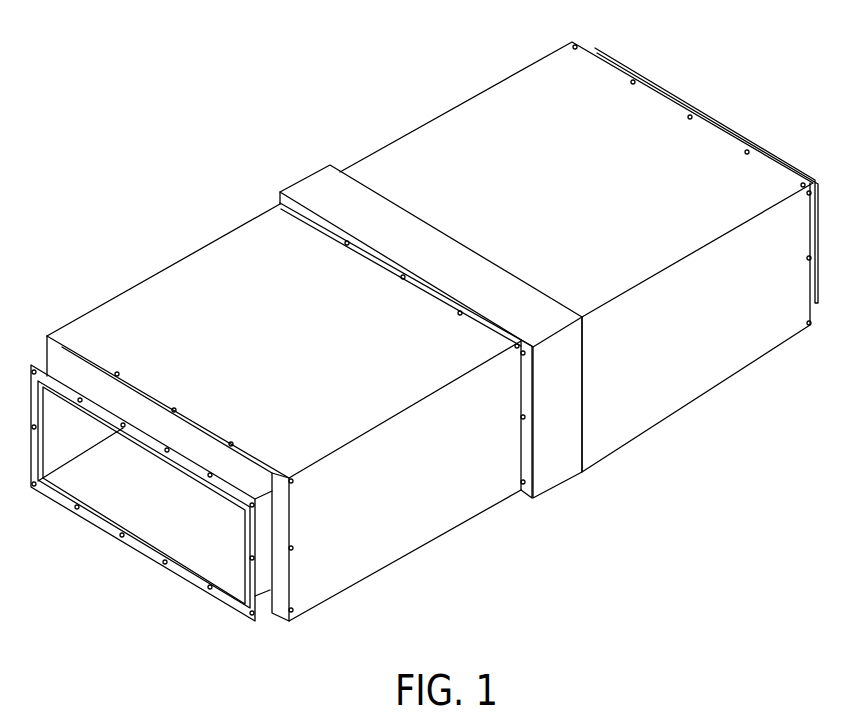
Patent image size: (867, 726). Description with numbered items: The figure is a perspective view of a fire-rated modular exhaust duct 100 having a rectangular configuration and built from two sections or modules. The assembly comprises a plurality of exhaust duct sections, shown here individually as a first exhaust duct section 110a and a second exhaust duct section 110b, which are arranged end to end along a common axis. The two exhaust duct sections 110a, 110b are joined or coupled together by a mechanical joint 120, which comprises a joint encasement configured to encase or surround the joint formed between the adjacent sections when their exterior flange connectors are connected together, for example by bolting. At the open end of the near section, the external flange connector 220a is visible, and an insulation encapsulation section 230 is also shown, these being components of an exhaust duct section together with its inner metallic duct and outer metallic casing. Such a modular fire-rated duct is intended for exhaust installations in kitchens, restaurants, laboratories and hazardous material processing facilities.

The fire-rated modular exhaust duct 100 is at (424, 325).
The exhaust duct section 110a is at (433, 502).
The exhaust duct section 110b is at (645, 362).
The mechanical joint 120 is at (563, 456).
The external flange connector 220a is at (128, 545).
The insulation encapsulation section 230 is at (283, 519).